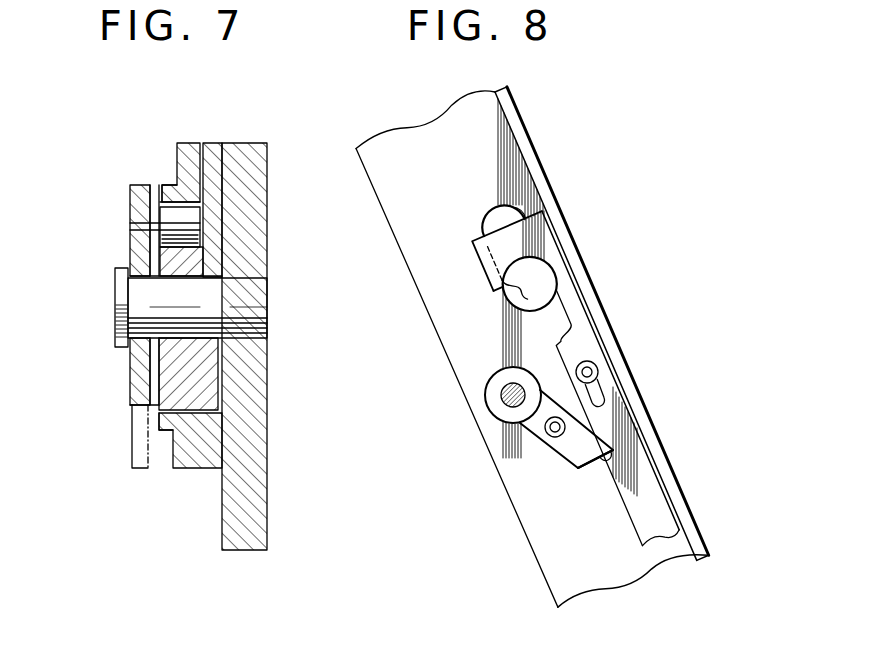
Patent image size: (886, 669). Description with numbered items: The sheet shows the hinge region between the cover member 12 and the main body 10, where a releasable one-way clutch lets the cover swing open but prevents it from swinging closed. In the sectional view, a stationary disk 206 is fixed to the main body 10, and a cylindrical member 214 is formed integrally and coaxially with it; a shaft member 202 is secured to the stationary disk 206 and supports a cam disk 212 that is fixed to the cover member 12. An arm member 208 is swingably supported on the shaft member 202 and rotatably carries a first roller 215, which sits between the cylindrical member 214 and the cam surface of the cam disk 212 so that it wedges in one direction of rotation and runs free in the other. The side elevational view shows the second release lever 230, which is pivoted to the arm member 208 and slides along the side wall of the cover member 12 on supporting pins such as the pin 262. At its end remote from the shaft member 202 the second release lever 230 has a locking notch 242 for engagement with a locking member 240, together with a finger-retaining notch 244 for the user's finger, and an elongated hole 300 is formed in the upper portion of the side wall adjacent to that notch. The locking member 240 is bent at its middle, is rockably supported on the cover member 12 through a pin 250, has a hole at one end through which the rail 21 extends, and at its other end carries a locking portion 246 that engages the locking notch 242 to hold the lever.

In FIG. 7, the main body 10 is at (258, 526).
In FIG. 7, the cover member 12 is at (211, 145).
In FIG. 8, the cover member 12 is at (513, 168).
In FIG. 8, the rail 21 is at (503, 388).
In FIG. 7, the shaft member 202 is at (117, 303).
In FIG. 7, the stationary disk 206 is at (188, 150).
In FIG. 7, the arm member 208 is at (137, 376).
In FIG. 7, the cam disk 212 is at (165, 402).
In FIG. 7, the cylindrical member 214 is at (168, 186).
In FIG. 7, the first roller 215 is at (162, 216).
In FIG. 8, the second release lever 230 is at (655, 508).
In FIG. 8, the locking member 240 is at (572, 460).
In FIG. 8, the locking notch 242 is at (603, 457).
In FIG. 8, the finger-retaining notch 244 is at (517, 293).
In FIG. 8, the locking portion 246 is at (612, 437).
In FIG. 8, the pin 250 is at (552, 433).
In FIG. 8, the pin 262 is at (597, 368).
In FIG. 8, the elongated hole 300 is at (520, 218).